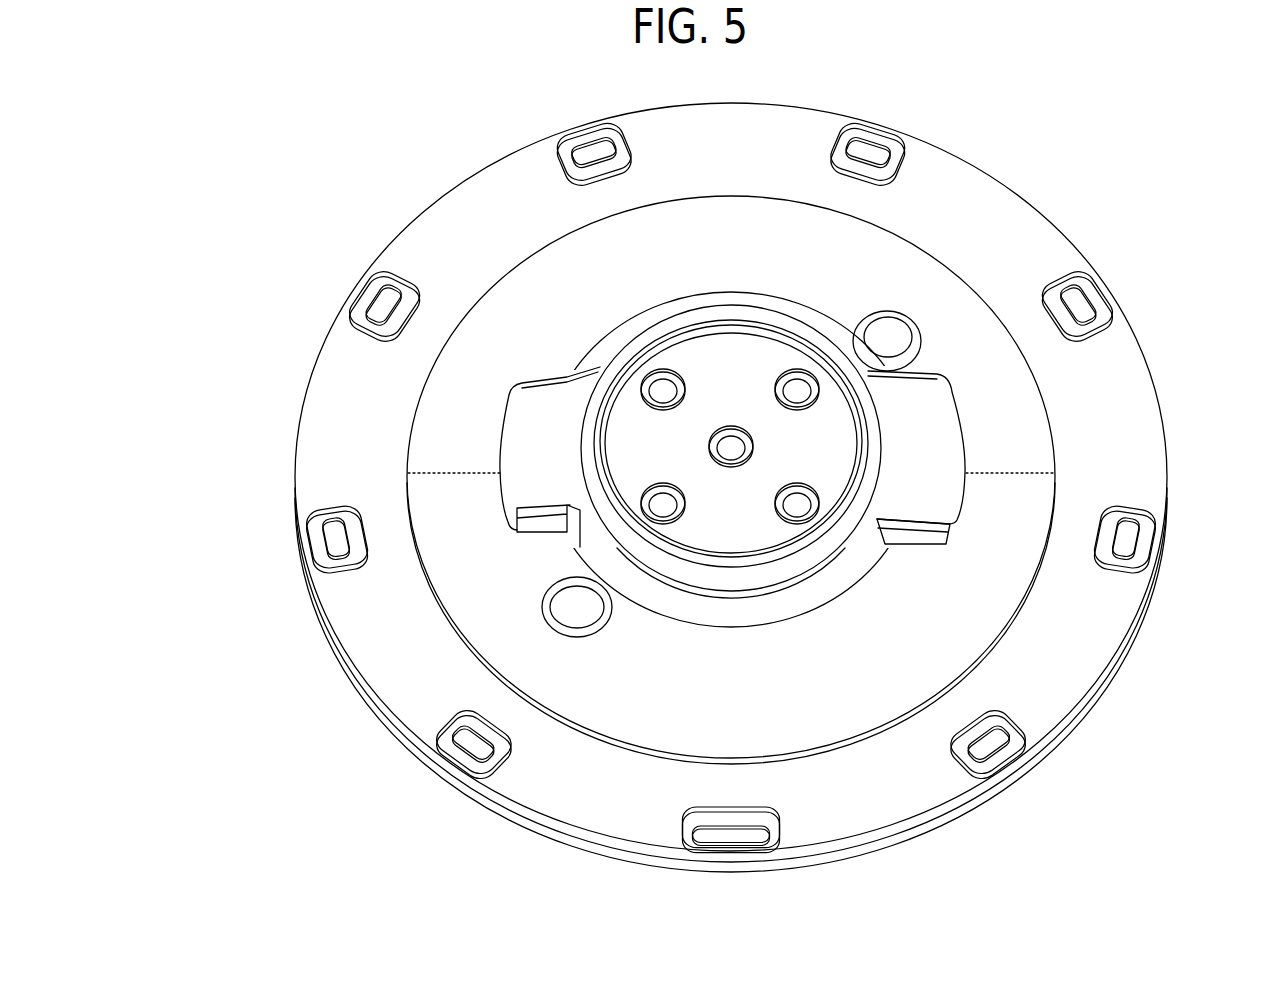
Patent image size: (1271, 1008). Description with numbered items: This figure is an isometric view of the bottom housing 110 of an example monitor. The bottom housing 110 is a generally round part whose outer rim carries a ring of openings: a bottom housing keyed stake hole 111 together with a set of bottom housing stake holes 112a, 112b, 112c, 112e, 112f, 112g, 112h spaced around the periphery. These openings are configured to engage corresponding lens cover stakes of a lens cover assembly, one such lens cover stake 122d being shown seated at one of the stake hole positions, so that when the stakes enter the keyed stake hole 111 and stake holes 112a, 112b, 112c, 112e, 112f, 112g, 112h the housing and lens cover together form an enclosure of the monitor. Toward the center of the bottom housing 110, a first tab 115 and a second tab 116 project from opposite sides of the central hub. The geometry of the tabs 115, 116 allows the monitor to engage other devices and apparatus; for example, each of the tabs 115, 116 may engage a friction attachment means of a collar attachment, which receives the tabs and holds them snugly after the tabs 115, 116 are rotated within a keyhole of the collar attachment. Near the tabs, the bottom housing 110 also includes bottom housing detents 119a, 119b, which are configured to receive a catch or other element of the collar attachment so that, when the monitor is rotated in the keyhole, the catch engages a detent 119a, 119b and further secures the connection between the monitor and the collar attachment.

The bottom housing 110 is at (365, 112).
The bottom housing keyed stake hole 111 is at (757, 850).
The bottom housing stake hole 112a is at (456, 750).
The bottom housing stake hole 112b is at (317, 542).
The bottom housing stake hole 112c is at (377, 300).
The bottom housing stake hole 112e is at (860, 142).
The bottom housing stake hole 112f is at (1087, 297).
The bottom housing stake hole 112g is at (1140, 548).
The bottom housing stake hole 112h is at (1003, 758).
The lens cover stake 122d is at (590, 140).
The first tab 115 is at (535, 527).
The second tab 116 is at (930, 370).
The bottom housing detent 119a is at (578, 628).
The bottom housing detent 119b is at (886, 330).